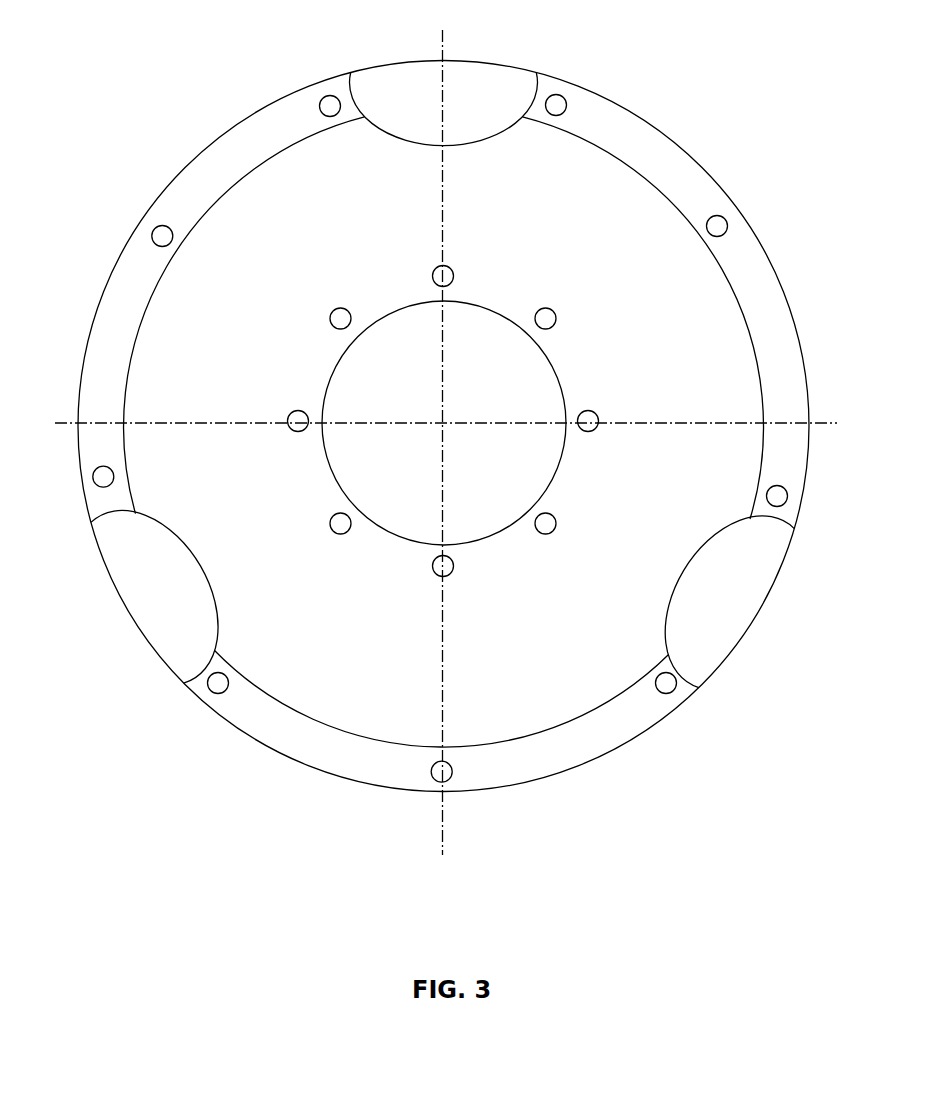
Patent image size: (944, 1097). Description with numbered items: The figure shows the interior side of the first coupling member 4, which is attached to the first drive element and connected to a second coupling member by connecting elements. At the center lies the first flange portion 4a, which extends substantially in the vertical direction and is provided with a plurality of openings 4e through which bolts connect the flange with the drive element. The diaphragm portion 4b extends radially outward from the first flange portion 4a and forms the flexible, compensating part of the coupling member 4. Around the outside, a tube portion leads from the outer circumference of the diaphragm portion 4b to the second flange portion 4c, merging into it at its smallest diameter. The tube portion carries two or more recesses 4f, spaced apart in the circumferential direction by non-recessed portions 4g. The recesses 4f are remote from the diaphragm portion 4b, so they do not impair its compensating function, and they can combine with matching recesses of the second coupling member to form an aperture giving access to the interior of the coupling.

The first coupling member 4 is at (205, 102).
The first flange portion 4a is at (583, 390).
The diaphragm portion 4b is at (622, 322).
The second flange portion 4c is at (643, 152).
The openings 4e is at (600, 427).
The recesses 4f is at (423, 144).
The non-recessed portions 4g is at (200, 245).